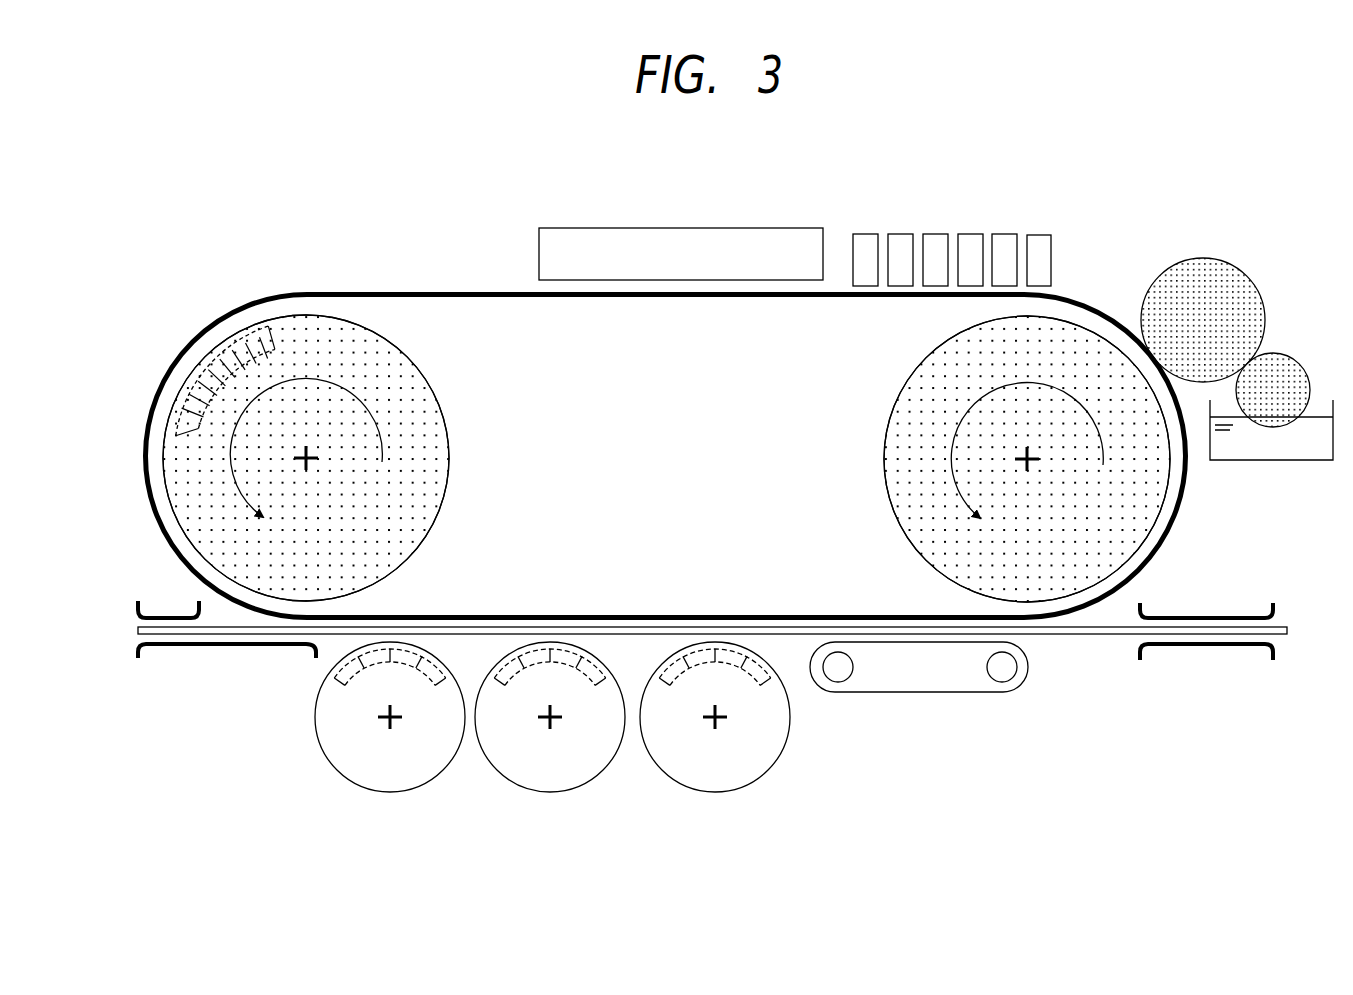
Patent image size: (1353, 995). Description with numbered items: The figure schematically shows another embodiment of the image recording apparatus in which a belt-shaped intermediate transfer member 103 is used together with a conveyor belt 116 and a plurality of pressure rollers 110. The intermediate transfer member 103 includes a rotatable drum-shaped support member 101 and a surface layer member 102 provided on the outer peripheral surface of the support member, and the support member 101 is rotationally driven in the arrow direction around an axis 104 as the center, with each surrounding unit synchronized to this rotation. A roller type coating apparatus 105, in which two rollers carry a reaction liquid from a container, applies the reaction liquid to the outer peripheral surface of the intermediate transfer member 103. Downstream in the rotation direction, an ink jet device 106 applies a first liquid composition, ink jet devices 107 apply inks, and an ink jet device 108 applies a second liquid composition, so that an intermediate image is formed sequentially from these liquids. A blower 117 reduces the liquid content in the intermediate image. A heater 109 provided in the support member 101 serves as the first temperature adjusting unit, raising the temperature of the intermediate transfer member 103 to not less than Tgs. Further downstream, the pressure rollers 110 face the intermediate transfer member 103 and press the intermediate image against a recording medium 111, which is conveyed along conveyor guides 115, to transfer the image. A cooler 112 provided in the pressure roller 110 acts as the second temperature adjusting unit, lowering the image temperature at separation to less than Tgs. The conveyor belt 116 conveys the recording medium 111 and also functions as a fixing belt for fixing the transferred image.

The support member 101 is at (1137, 500).
The surface layer member 102 is at (1190, 473).
The intermediate transfer member 103 is at (717, 407).
The axis 104 is at (327, 457).
The roller type coating apparatus 105 is at (1238, 268).
The ink jet device 106 is at (1038, 243).
The ink jet devices 107 is at (1020, 214).
The ink jet device 108 is at (862, 234).
The heater 109 is at (185, 388).
The pressure rollers 110 is at (347, 757).
The recording medium 111 is at (1081, 634).
The cooler 112 is at (400, 648).
The conveyor guides 115 is at (218, 648).
The conveyor belt 116 is at (913, 695).
The blower 117 is at (685, 228).